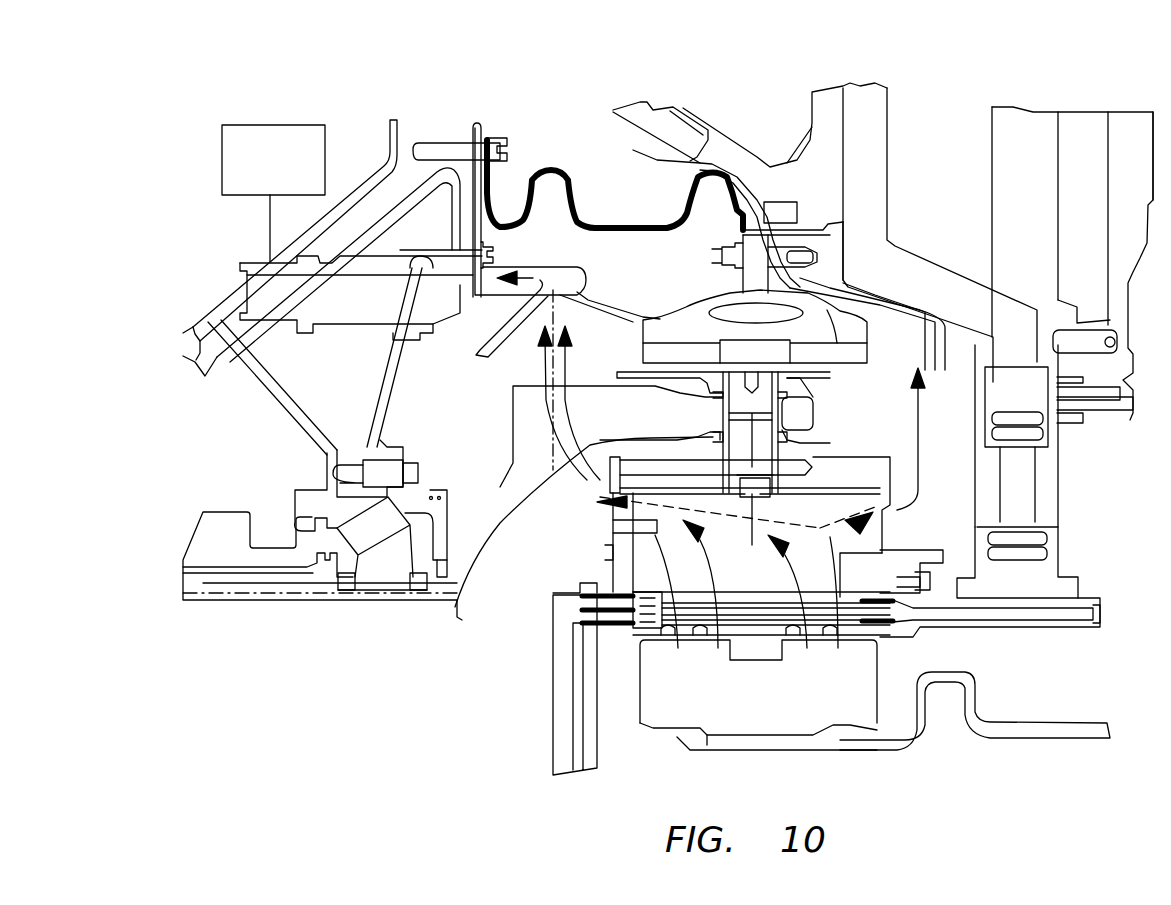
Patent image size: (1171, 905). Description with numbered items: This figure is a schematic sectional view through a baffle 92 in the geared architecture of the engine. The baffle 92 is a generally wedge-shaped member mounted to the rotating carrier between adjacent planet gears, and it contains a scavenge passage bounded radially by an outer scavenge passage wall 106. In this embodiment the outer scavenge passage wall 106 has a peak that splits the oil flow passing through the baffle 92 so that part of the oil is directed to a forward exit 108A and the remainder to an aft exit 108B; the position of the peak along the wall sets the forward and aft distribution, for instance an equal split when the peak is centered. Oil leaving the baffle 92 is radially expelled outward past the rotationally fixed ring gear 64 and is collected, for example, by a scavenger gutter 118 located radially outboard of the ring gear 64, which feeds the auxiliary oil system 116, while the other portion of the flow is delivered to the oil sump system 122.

The auxiliary oil system 116 is at (294, 176).
The oil sump system 122 is at (650, 140).
The scavenger gutter 118 is at (570, 262).
The ring gear 64 is at (833, 330).
The outer scavenge passage wall 106 is at (840, 520).
The forward exit 108A is at (620, 503).
The aft exit 108B is at (897, 508).
The baffle 92 is at (857, 543).